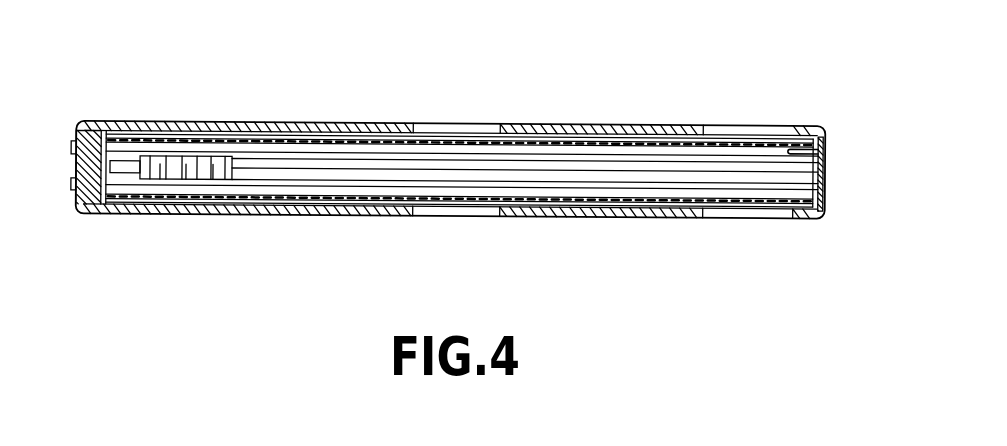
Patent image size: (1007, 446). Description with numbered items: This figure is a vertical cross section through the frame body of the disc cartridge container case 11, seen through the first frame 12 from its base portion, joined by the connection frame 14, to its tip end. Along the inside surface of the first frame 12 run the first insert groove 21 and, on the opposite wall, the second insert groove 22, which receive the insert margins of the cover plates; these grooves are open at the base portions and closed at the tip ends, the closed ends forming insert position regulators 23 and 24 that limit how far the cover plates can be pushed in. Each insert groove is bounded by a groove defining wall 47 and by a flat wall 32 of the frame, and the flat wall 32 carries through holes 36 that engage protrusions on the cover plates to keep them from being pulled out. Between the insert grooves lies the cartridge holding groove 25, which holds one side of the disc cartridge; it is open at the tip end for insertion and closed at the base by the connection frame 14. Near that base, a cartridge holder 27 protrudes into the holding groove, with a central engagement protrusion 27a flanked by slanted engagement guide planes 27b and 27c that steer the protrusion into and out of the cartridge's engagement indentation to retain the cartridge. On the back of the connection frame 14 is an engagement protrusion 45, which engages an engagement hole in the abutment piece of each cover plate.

The container case 11 is at (291, 122).
The first frame 12 is at (577, 127).
The connection frame 14 is at (76, 193).
The first insert groove 21 is at (658, 135).
The second insert groove 22 is at (585, 199).
The insert position regulator 23 is at (828, 130).
The insert position regulator 24 is at (797, 212).
The cartridge holding groove 25 is at (813, 172).
The cartridge holder 27 is at (216, 181).
The engagement protrusion 27a is at (186, 181).
The engagement guide plane 27b is at (210, 158).
The engagement guide plane 27c is at (168, 158).
The flat wall 32 is at (688, 127).
The through hole 36 is at (198, 141).
The engagement protrusion 45 is at (73, 141).
The groove defining wall 47 is at (783, 151).